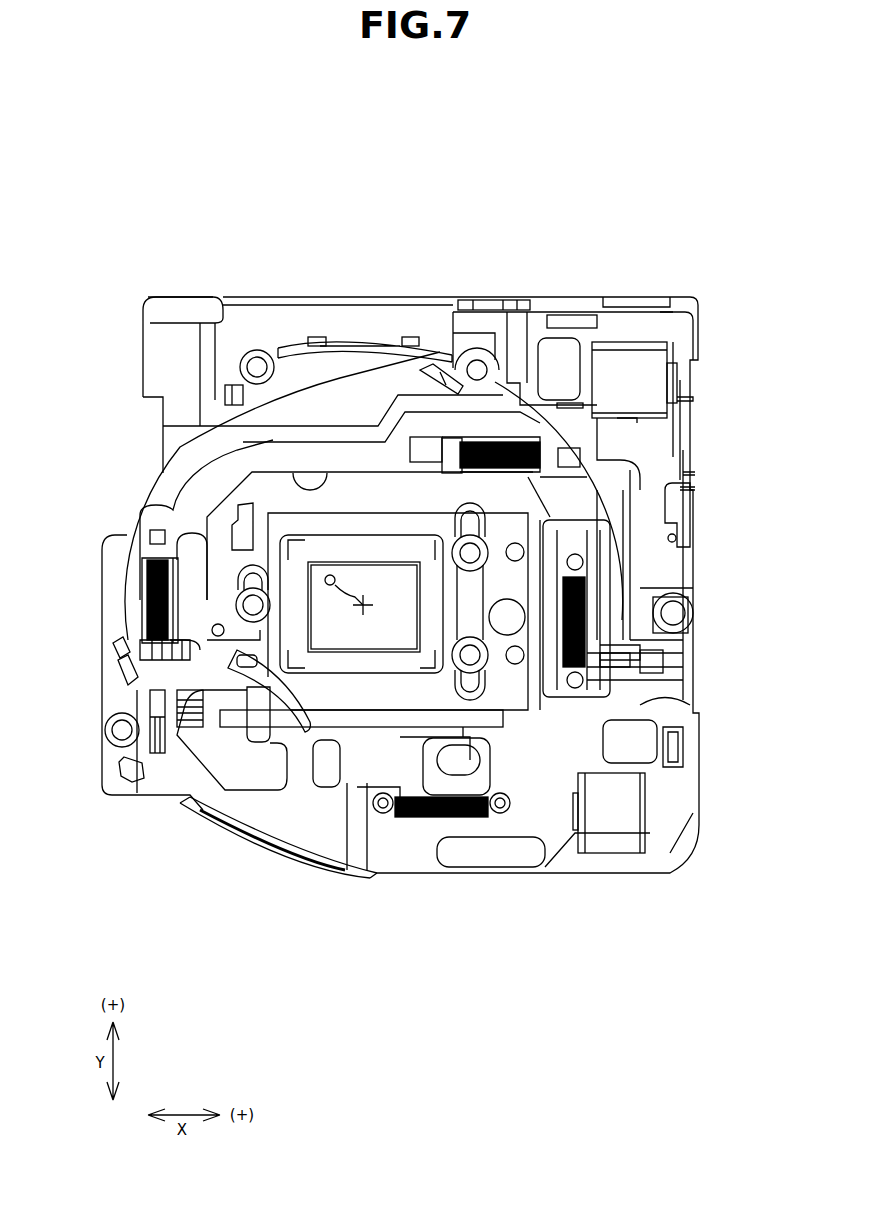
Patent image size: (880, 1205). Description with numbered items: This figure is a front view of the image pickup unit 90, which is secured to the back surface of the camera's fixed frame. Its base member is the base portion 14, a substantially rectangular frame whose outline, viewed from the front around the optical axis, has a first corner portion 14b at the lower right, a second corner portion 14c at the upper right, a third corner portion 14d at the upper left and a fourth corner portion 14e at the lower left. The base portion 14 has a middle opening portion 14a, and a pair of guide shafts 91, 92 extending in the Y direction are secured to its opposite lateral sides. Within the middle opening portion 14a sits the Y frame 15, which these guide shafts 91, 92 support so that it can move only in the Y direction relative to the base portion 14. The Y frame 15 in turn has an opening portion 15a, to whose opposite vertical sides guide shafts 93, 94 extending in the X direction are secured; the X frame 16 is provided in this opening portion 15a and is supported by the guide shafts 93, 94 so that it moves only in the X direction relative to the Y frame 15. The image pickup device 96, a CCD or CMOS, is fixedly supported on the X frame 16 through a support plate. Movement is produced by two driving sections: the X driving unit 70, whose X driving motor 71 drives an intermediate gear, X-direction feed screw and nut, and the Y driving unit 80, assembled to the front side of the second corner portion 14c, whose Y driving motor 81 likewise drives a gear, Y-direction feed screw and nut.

The base portion 14 is at (247, 300).
The middle opening portion 14a is at (213, 450).
The first corner portion 14b is at (700, 855).
The second corner portion 14c is at (700, 305).
The third corner portion 14d is at (160, 470).
The fourth corner portion 14e is at (193, 813).
The Y frame 15 is at (362, 440).
The opening portion 15a is at (300, 478).
The X frame 16 is at (340, 475).
The X driving unit 70 is at (670, 945).
The X driving motor 71 is at (583, 855).
The Y driving unit 80 is at (640, 272).
The Y driving motor 81 is at (650, 360).
The image pickup unit 90 is at (515, 997).
The guide shaft 91 is at (152, 663).
The guide shaft 92 is at (660, 657).
The guide shaft 93 is at (432, 437).
The guide shaft 94 is at (353, 740).
The image pickup device 96 is at (355, 635).